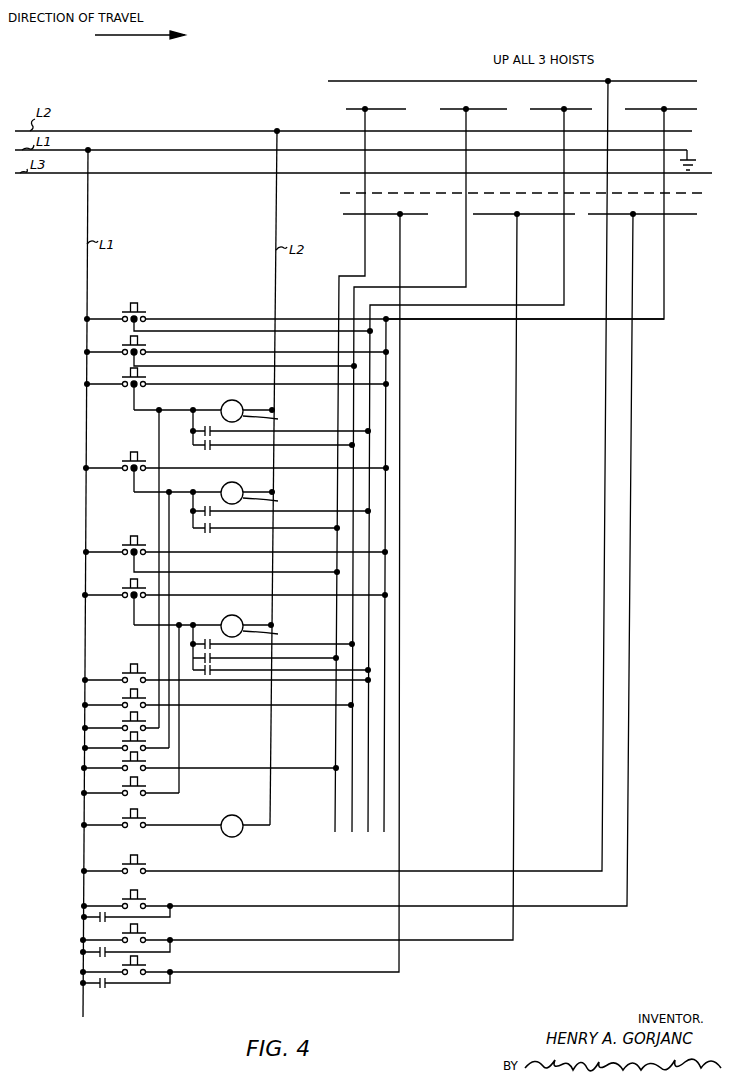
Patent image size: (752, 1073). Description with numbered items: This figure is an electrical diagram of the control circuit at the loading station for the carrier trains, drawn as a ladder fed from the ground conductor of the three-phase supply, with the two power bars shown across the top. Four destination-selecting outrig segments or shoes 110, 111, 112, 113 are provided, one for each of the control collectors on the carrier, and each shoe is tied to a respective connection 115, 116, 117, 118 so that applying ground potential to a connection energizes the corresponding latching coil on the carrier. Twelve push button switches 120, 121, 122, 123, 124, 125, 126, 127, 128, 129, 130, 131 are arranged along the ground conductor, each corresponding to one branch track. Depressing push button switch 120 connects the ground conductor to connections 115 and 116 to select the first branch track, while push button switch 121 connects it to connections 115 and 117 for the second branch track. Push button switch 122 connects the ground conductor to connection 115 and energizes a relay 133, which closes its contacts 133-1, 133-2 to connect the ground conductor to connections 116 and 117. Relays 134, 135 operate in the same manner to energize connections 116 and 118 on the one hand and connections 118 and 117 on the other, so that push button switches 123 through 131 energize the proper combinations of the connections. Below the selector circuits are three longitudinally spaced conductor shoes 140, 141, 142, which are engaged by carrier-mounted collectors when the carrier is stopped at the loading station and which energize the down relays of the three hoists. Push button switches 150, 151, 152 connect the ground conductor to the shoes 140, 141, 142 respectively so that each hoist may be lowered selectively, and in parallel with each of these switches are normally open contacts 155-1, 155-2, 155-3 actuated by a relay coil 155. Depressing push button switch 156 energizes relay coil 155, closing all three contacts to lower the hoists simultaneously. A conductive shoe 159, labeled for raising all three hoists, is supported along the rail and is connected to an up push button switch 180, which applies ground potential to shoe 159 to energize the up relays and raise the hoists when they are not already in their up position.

The outrig segment 110 is at (626, 112).
The outrig segment 111 is at (568, 112).
The outrig segment 112 is at (470, 112).
The outrig segment 113 is at (368, 112).
The connection 115 is at (387, 366).
The connection 116 is at (371, 341).
The connection 117 is at (355, 300).
The connection 118 is at (339, 297).
The push button switch 120 is at (134, 308).
The push button switch 121 is at (130, 344).
The push button switch 122 is at (129, 376).
The push button switch 123 is at (134, 458).
The push button switch 124 is at (134, 540).
The push button switch 125 is at (131, 586).
The push button switch 126 is at (131, 673).
The push button switch 127 is at (127, 699).
The push button switch 128 is at (127, 722).
The push button switch 129 is at (127, 743).
The push button switch 130 is at (127, 763).
The push button switch 131 is at (127, 787).
The relay 133 is at (237, 404).
The relay contact 133-1 is at (205, 421).
The relay contact 133-2 is at (200, 448).
The relay 134 is at (219, 487).
The relay 135 is at (223, 615).
The conductor shoe 140 is at (620, 216).
The conductor shoe 141 is at (553, 218).
The conductor shoe 142 is at (382, 218).
The push button switch 150 is at (130, 902).
The push button switch 151 is at (143, 928).
The push button switch 152 is at (138, 977).
The relay coil 155 is at (238, 835).
The normally open contact 155-1 is at (99, 921).
The normally open contact 155-2 is at (99, 956).
The normally open contact 155-3 is at (99, 989).
The push button switch 156 is at (122, 824).
The conductive shoe 159 is at (398, 81).
The up push button switch 180 is at (124, 864).